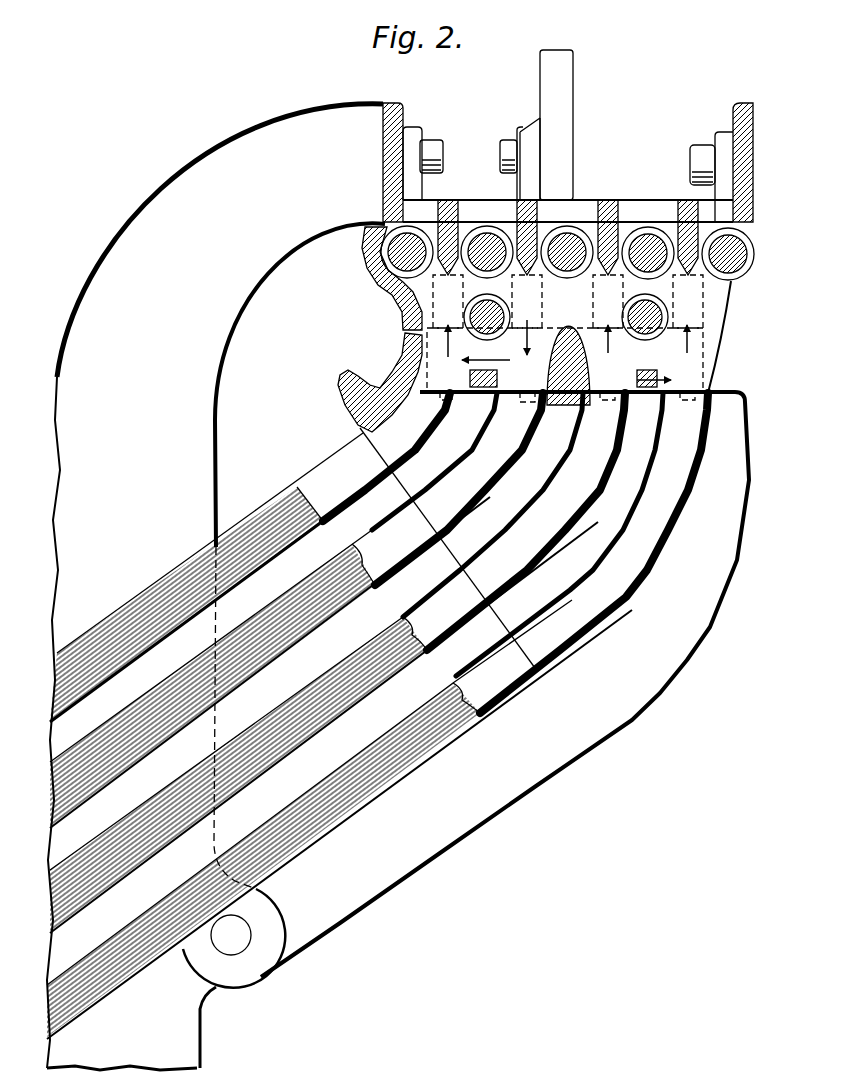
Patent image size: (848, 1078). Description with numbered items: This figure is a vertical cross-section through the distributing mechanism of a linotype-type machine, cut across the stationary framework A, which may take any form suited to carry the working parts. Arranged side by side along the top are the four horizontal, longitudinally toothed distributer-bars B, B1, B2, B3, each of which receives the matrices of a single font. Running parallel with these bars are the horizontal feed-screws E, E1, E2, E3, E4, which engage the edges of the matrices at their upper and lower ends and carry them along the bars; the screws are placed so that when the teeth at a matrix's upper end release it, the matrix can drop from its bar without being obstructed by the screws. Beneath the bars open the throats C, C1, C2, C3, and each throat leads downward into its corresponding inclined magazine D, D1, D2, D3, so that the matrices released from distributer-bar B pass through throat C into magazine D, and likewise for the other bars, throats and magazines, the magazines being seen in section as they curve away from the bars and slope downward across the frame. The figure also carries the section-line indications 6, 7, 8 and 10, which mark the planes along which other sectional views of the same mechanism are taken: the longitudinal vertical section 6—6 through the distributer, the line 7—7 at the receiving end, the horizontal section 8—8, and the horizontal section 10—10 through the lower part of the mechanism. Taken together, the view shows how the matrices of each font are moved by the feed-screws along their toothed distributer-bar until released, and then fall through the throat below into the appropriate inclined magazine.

The section line 6— 6 is at (527, 120).
The section line 7— 7 is at (448, 198).
The section line 8— 8 is at (360, 231).
The section line 10— 10 is at (760, 357).
The stationary framework A is at (411, 124).
The distributer-bar B is at (680, 218).
The distributer-bar B1 is at (592, 213).
The distributer-bar B2 is at (520, 206).
The distributer-bar B3 is at (452, 197).
The throat C is at (582, 553).
The throat C1 is at (514, 521).
The throat C2 is at (457, 489).
The throat C3 is at (386, 457).
The inclined magazine D is at (339, 819).
The inclined magazine D1 is at (324, 727).
The inclined magazine D2 is at (270, 662).
The inclined magazine D3 is at (206, 577).
The feed-screw E is at (755, 255).
The feed-screw E1 is at (648, 242).
The feed-screw E2 is at (567, 239).
The feed-screw E3 is at (487, 239).
The feed-screw E4 is at (407, 239).